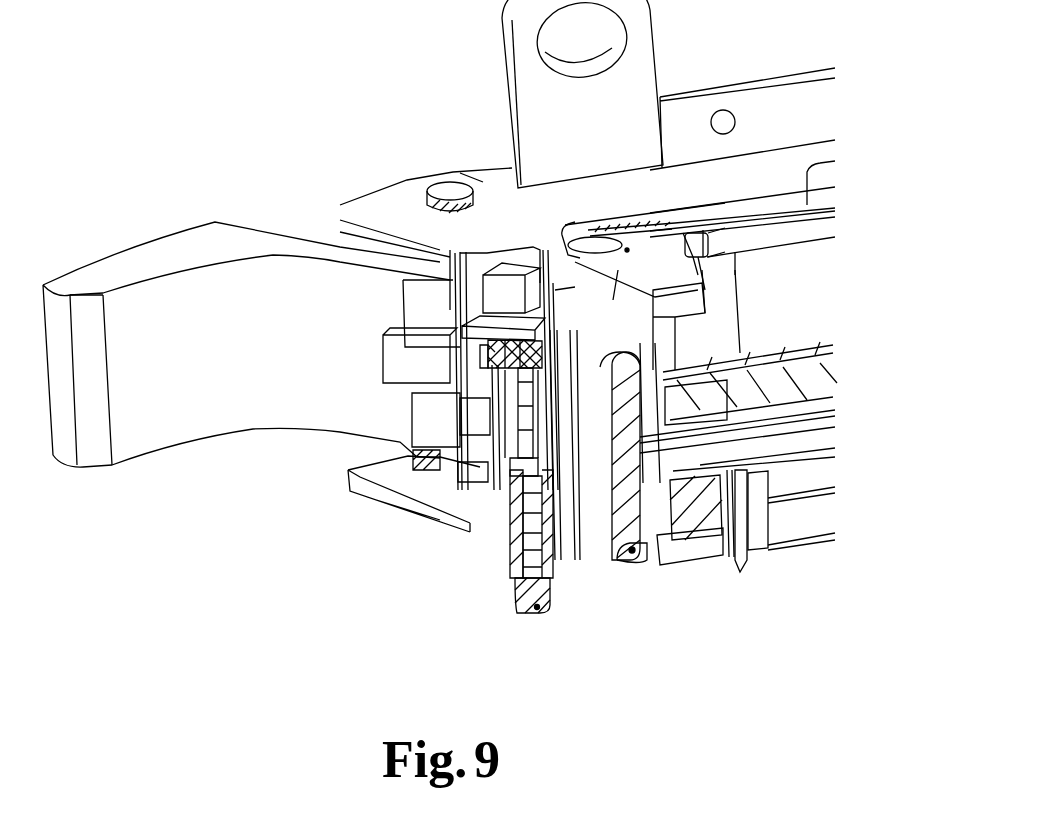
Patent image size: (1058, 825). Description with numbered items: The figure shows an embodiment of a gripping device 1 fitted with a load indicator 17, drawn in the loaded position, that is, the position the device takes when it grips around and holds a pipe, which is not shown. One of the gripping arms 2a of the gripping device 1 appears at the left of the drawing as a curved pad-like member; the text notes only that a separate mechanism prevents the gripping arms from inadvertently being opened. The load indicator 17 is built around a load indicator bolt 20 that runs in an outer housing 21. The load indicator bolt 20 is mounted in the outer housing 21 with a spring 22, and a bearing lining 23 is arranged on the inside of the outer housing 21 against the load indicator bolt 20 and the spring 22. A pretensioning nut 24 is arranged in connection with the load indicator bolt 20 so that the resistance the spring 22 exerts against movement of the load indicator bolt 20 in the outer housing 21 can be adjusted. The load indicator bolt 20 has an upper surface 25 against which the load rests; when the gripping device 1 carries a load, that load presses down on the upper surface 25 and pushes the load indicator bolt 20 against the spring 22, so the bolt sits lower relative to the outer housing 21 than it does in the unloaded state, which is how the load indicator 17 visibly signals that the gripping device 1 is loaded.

The gripping device 1 is at (299, 530).
The gripping arm 2a is at (67, 457).
The load indicator 17 is at (584, 585).
The load indicator bolt 20 is at (480, 350).
The outer housing 21 is at (492, 467).
The spring 22 is at (513, 503).
The bearing lining 23 is at (492, 402).
The pretensioning nut 24 is at (518, 603).
The upper surface 25 is at (510, 323).